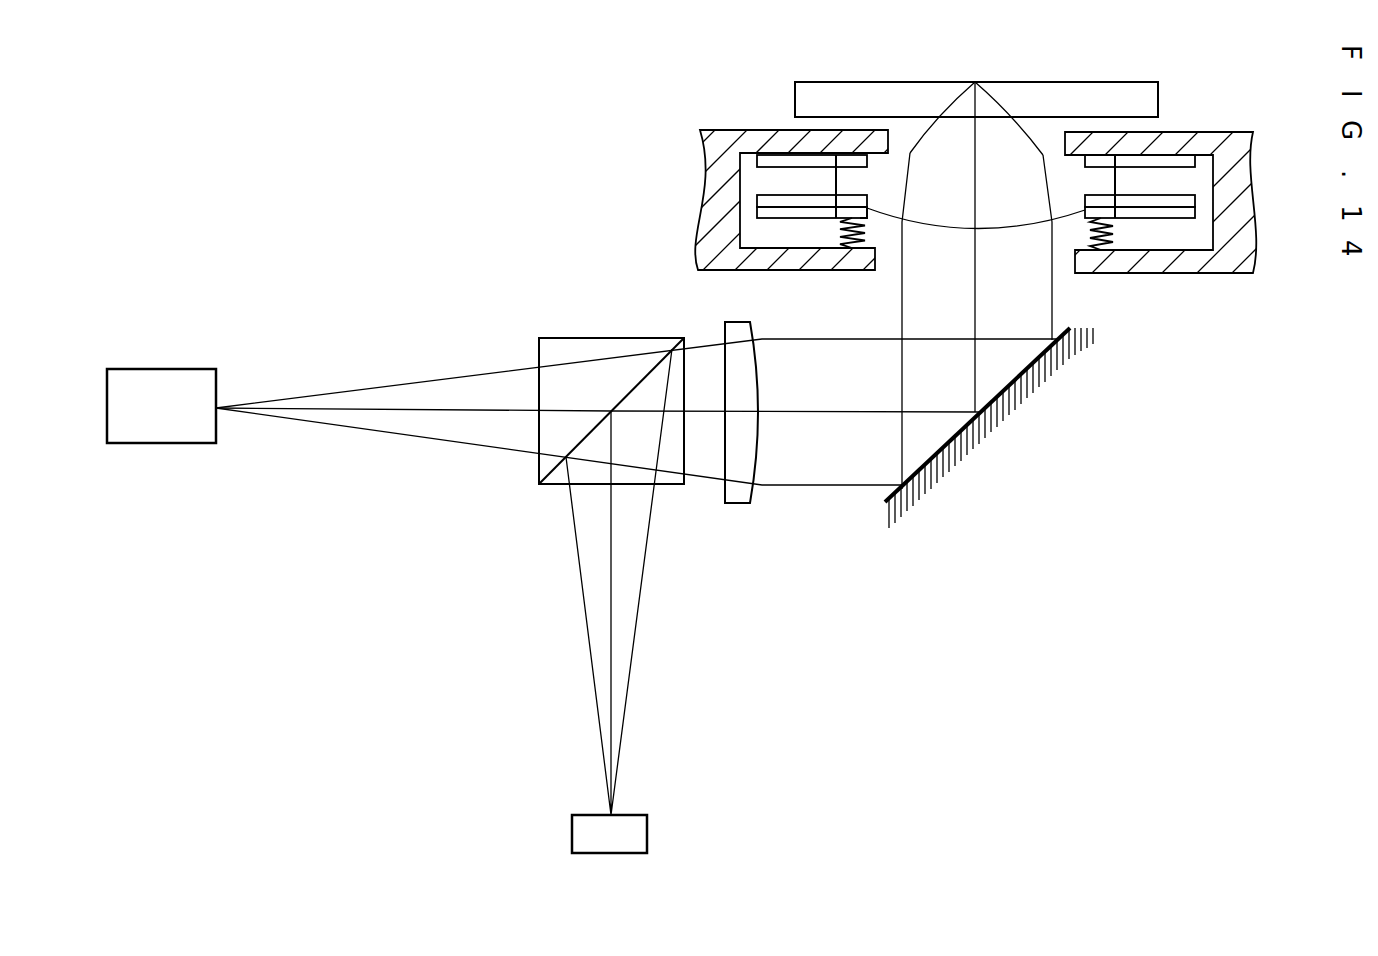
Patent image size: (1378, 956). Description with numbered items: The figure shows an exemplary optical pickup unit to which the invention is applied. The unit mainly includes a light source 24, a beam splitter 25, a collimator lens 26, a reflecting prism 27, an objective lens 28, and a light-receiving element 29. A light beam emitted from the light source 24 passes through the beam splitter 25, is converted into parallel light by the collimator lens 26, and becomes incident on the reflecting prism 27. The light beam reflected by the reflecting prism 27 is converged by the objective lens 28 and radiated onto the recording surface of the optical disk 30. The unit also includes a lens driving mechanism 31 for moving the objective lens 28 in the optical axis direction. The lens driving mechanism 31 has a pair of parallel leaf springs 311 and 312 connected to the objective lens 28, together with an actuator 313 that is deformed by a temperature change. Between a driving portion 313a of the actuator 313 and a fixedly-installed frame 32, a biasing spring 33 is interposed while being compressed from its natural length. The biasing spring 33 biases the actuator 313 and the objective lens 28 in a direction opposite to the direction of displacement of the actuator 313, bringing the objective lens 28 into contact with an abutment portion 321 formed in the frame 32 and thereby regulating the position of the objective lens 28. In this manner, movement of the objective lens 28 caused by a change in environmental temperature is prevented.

The light source 24 is at (163, 367).
The beam splitter 25 is at (578, 338).
The collimator lens 26 is at (738, 507).
The reflecting prism 27 is at (918, 466).
The objective lens 28 is at (951, 228).
The light-receiving element 29 is at (622, 813).
The optical disk 30 is at (1073, 82).
The lens driving mechanism 31 is at (689, 120).
The parallel leaf spring 311 is at (782, 160).
The parallel leaf spring 312 is at (778, 200).
The actuator 313 is at (778, 215).
The driving portion 313a is at (865, 210).
The frame 32 is at (1187, 275).
The abutment portion 321 is at (1117, 138).
The biasing spring 33 is at (846, 236).